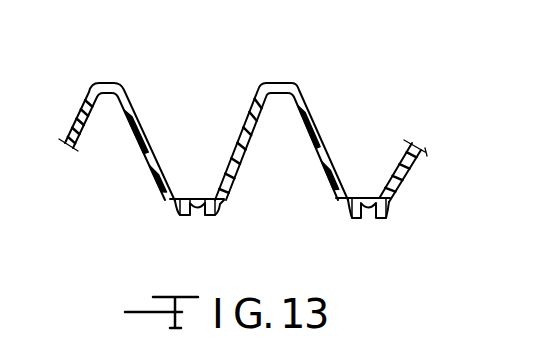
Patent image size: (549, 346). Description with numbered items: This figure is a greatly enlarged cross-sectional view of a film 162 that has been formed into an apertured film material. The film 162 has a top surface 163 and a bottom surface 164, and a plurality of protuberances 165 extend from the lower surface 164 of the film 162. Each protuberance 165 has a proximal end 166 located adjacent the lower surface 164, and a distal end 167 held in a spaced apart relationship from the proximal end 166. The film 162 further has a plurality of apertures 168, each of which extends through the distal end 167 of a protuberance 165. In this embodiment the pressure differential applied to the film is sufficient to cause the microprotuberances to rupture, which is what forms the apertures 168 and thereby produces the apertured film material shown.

The film 162 is at (145, 76).
The top surface 163 is at (277, 86).
The bottom surface 164 is at (278, 88).
The protuberance 165 is at (244, 189).
The proximal end 166 is at (132, 127).
The distal end 167 is at (173, 209).
The aperture 168 is at (176, 216).